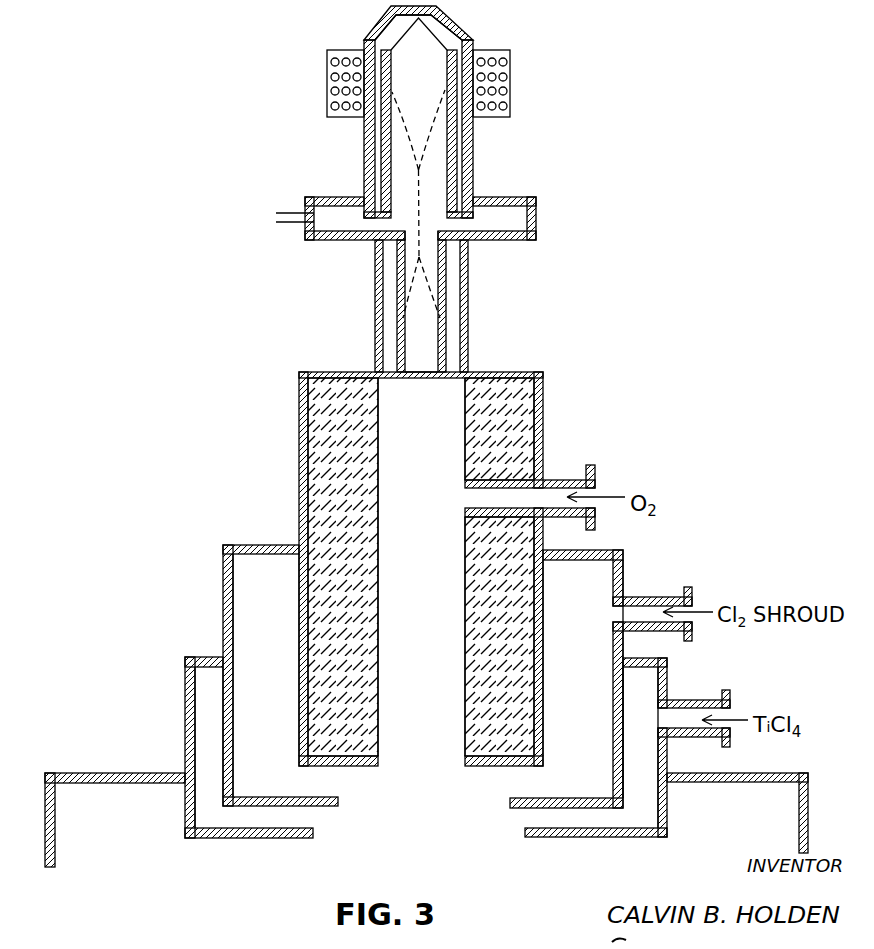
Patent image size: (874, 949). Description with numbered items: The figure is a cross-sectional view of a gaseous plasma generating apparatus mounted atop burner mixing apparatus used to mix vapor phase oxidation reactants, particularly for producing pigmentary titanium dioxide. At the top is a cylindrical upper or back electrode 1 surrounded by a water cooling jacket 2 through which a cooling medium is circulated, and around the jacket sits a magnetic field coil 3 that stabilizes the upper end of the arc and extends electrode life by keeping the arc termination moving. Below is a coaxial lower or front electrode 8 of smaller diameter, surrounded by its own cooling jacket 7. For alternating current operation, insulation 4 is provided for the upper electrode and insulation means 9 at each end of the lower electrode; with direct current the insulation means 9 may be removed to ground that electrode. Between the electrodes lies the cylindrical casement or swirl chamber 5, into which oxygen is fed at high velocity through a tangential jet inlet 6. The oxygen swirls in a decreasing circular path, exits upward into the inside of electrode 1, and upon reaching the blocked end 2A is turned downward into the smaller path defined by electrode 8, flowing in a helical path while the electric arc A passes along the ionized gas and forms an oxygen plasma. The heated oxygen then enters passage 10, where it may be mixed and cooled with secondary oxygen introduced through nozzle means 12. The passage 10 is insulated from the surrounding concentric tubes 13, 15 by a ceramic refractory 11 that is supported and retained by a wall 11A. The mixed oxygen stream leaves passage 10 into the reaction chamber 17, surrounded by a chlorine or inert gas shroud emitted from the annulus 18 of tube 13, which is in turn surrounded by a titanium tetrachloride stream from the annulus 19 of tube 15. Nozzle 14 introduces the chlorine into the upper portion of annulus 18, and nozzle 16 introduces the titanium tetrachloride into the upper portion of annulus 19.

The upper or back electrode 1 is at (381, 144).
The water cooling jacket 2 is at (444, 30).
The blocked end 2A is at (388, 52).
The magnetic field coil 3 is at (327, 80).
The insulation 4 is at (462, 212).
The cylindrical casement or swirl chamber 5 is at (331, 197).
The jet inlet 6 is at (292, 227).
The cooling jacket 7 is at (377, 292).
The lower or front electrode 8 is at (455, 292).
The insulation means 9 is at (397, 236).
The passage 10 is at (421, 567).
The ceramic refractory 11 is at (327, 428).
The wall 11A is at (299, 485).
The nozzle means 12 is at (559, 478).
The tube 13 is at (223, 596).
The nozzle 14 is at (646, 597).
The tube 15 is at (185, 702).
The nozzle 16 is at (705, 700).
The reaction chamber 17 is at (431, 866).
The annulus 18 is at (282, 697).
The annulus 19 is at (654, 764).
The electric arc A is at (440, 106).